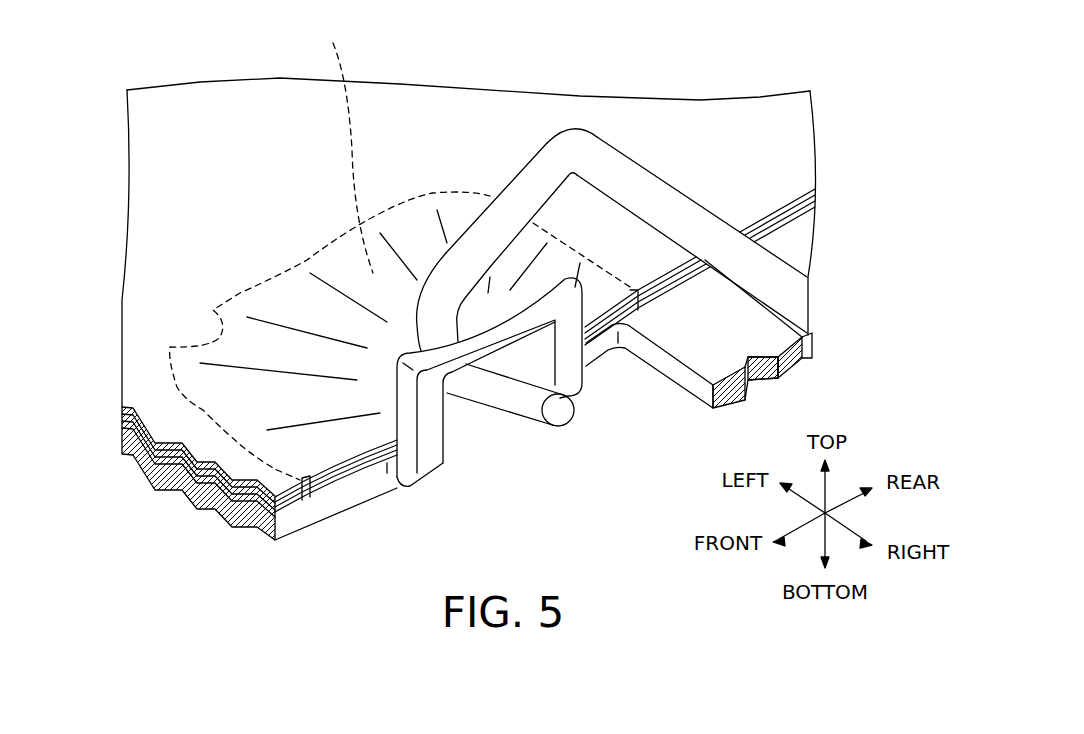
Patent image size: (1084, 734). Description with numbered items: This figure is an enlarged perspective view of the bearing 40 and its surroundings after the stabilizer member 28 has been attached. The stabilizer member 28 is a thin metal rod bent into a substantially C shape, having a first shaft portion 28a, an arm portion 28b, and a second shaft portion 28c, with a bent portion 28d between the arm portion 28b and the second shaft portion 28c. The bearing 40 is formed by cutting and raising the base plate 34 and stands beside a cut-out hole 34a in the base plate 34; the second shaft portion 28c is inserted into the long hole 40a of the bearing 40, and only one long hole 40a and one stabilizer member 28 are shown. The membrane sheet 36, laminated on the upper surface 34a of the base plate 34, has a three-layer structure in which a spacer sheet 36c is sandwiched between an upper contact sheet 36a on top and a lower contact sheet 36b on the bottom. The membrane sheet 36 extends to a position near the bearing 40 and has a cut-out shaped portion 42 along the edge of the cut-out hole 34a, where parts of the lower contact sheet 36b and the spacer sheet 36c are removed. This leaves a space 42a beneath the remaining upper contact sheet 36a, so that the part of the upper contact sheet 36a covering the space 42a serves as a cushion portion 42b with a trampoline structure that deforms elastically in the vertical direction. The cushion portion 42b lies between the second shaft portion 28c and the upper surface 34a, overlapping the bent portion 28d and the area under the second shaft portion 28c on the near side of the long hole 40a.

The stabilizer member 28 is at (712, 205).
The first shaft portion 28a is at (658, 190).
The arm portion 28b is at (512, 190).
The second shaft portion 28c is at (523, 407).
The bent portion 28d is at (430, 317).
The base plate 34 is at (758, 337).
The upper surface 34a is at (300, 512).
The membrane sheet 36 is at (916, 128).
The upper contact sheet 36a is at (800, 195).
The lower contact sheet 36b is at (800, 214).
The spacer sheet 36c is at (803, 203).
The bearing 40 is at (556, 278).
The long hole 40a is at (447, 395).
The cut-out shaped portion 42 is at (170, 346).
The space 42a is at (358, 39).
The cushion portion 42b is at (335, 437).